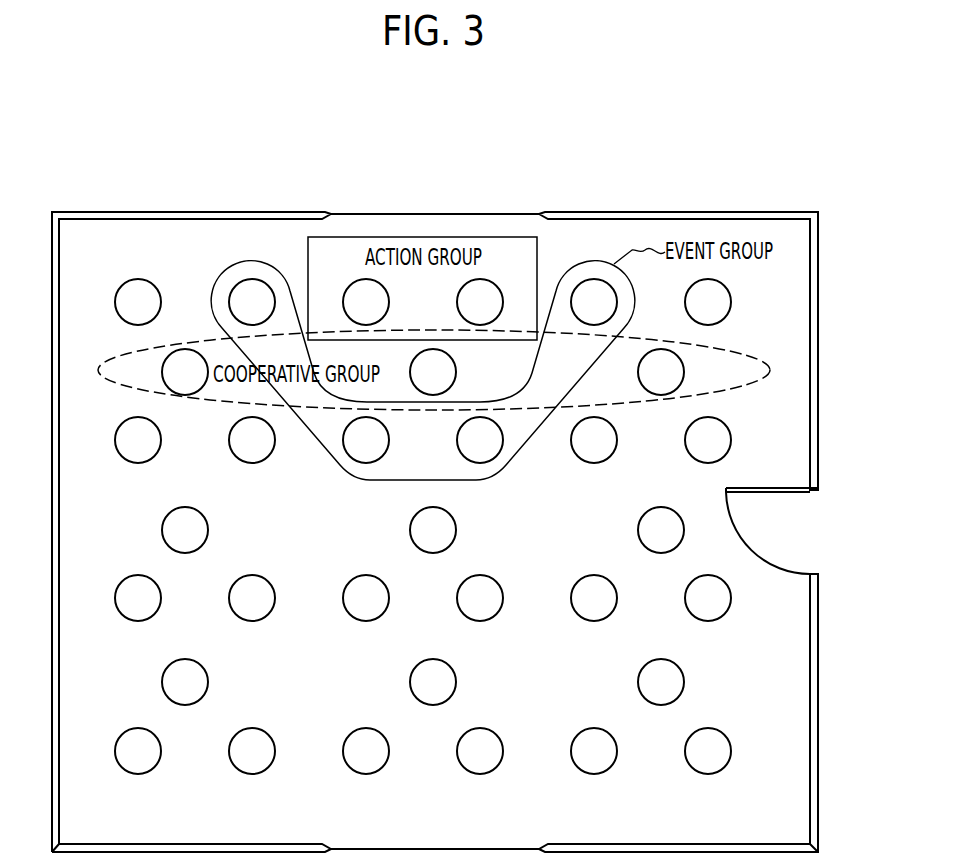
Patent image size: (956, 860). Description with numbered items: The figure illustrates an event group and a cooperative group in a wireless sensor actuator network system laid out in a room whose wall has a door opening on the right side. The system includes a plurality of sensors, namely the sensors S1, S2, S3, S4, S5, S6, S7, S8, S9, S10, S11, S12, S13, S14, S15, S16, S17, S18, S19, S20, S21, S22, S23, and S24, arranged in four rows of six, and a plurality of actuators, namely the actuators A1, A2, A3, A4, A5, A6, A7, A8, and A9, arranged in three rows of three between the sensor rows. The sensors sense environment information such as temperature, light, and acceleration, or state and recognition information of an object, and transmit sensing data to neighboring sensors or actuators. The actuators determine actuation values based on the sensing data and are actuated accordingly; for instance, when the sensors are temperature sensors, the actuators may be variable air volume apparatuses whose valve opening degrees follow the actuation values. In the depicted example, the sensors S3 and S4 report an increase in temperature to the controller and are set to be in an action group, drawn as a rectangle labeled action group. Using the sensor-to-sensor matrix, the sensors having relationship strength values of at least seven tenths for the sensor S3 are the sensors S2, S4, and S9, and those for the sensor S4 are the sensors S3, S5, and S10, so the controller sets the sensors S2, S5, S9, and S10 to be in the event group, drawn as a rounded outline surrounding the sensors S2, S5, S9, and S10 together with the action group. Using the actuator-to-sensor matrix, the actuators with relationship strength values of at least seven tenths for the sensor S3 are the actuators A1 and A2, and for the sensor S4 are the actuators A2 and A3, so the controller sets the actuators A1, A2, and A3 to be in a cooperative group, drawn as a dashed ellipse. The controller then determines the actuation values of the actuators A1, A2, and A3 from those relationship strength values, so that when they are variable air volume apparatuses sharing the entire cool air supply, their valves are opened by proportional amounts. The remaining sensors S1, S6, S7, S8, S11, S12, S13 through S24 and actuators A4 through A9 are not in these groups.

The sensor S1 is at (138, 302).
The sensor S2 is at (252, 302).
The sensor S3 is at (366, 302).
The sensor S4 is at (480, 302).
The sensor S5 is at (594, 302).
The sensor S6 is at (708, 302).
The sensor S7 is at (138, 440).
The sensor S8 is at (252, 440).
The sensor S9 is at (366, 440).
The sensor S10 is at (480, 440).
The sensor S11 is at (594, 440).
The sensor S12 is at (708, 440).
The sensor S13 is at (138, 598).
The sensor S14 is at (252, 598).
The sensor S15 is at (366, 598).
The sensor S16 is at (480, 598).
The sensor S17 is at (594, 598).
The sensor S18 is at (708, 598).
The sensor S19 is at (138, 751).
The sensor S20 is at (252, 751).
The sensor S21 is at (366, 751).
The sensor S22 is at (480, 751).
The sensor S23 is at (594, 751).
The sensor S24 is at (708, 751).
The actuator A1 is at (185, 372).
The actuator A2 is at (433, 372).
The actuator A3 is at (661, 372).
The actuator A4 is at (185, 530).
The actuator A5 is at (433, 530).
The actuator A6 is at (661, 530).
The actuator A7 is at (185, 682).
The actuator A8 is at (433, 682).
The actuator A9 is at (661, 682).